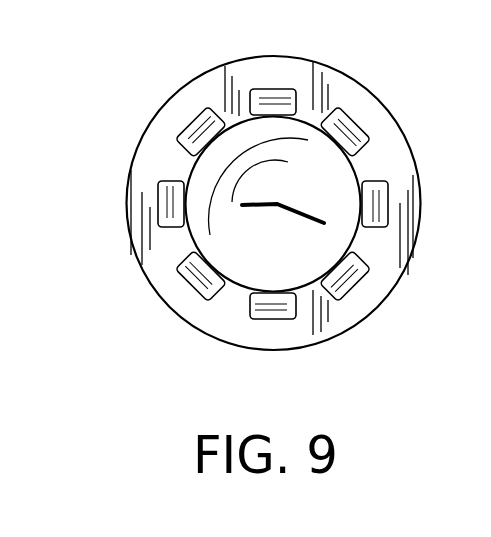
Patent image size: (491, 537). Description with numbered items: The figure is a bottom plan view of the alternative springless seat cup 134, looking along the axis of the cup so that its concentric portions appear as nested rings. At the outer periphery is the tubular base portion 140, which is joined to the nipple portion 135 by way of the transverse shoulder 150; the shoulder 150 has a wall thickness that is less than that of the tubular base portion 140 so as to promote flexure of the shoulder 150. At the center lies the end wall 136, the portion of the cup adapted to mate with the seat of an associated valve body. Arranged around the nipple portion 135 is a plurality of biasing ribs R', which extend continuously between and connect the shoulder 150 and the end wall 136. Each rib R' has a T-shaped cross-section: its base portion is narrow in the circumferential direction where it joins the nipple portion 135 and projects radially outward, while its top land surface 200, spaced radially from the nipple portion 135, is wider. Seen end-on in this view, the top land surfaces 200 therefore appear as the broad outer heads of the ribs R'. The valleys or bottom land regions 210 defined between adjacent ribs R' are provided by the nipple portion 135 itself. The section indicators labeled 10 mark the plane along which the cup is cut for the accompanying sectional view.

The seat cup 134 is at (367, 80).
The nipple portion 135 is at (242, 296).
The end wall 136 is at (292, 262).
The tubular base portion 140 is at (149, 116).
The shoulder 150 is at (162, 155).
The top land surface 200 is at (268, 323).
The bottom land regions 210 is at (182, 244).
The biasing ribs R' is at (210, 64).
The section line for FIG. 10 is at (112, 208).